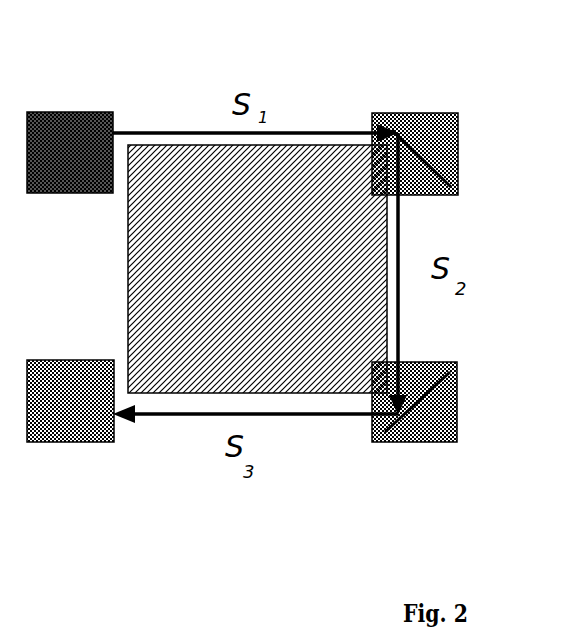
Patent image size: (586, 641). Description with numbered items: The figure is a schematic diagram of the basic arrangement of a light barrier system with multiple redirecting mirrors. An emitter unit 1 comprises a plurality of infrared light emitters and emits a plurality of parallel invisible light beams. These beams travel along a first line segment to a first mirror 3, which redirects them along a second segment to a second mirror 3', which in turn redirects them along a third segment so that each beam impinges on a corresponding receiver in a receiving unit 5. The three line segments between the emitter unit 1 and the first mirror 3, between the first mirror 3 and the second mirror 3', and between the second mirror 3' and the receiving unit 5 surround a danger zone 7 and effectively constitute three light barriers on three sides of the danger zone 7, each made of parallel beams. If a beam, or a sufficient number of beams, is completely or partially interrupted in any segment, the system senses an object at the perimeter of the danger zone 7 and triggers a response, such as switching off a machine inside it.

The emitter unit 1 is at (80, 112).
The first mirror 3 is at (450, 136).
The second mirror 3' is at (457, 420).
The receiving unit 5 is at (82, 432).
The danger zone 7 is at (318, 400).